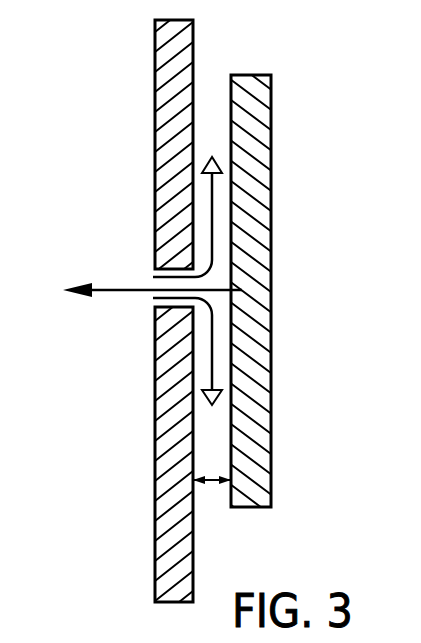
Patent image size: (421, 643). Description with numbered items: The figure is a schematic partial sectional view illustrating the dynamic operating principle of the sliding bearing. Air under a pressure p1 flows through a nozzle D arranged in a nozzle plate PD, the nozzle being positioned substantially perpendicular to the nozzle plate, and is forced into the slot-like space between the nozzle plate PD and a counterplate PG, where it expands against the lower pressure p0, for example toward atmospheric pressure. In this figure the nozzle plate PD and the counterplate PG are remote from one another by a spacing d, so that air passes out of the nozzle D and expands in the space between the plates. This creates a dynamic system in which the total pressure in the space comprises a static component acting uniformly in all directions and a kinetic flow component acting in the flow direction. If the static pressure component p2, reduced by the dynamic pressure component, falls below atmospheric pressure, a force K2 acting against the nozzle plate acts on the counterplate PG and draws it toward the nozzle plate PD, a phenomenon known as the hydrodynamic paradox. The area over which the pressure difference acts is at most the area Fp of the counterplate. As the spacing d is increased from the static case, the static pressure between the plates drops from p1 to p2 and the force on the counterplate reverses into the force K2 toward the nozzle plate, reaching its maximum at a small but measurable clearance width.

The nozzle plate PD is at (166, 541).
The counterplate PG is at (250, 460).
The spacing d is at (213, 483).
The nozzle D is at (153, 273).
The force toward the nozzle plate K2 is at (152, 310).
The supply air pressure p1 is at (46, 295).
The ambient pressure p0 is at (342, 145).
The static pressure component p2 is at (220, 248).
The area of the counterplate Fp is at (231, 127).